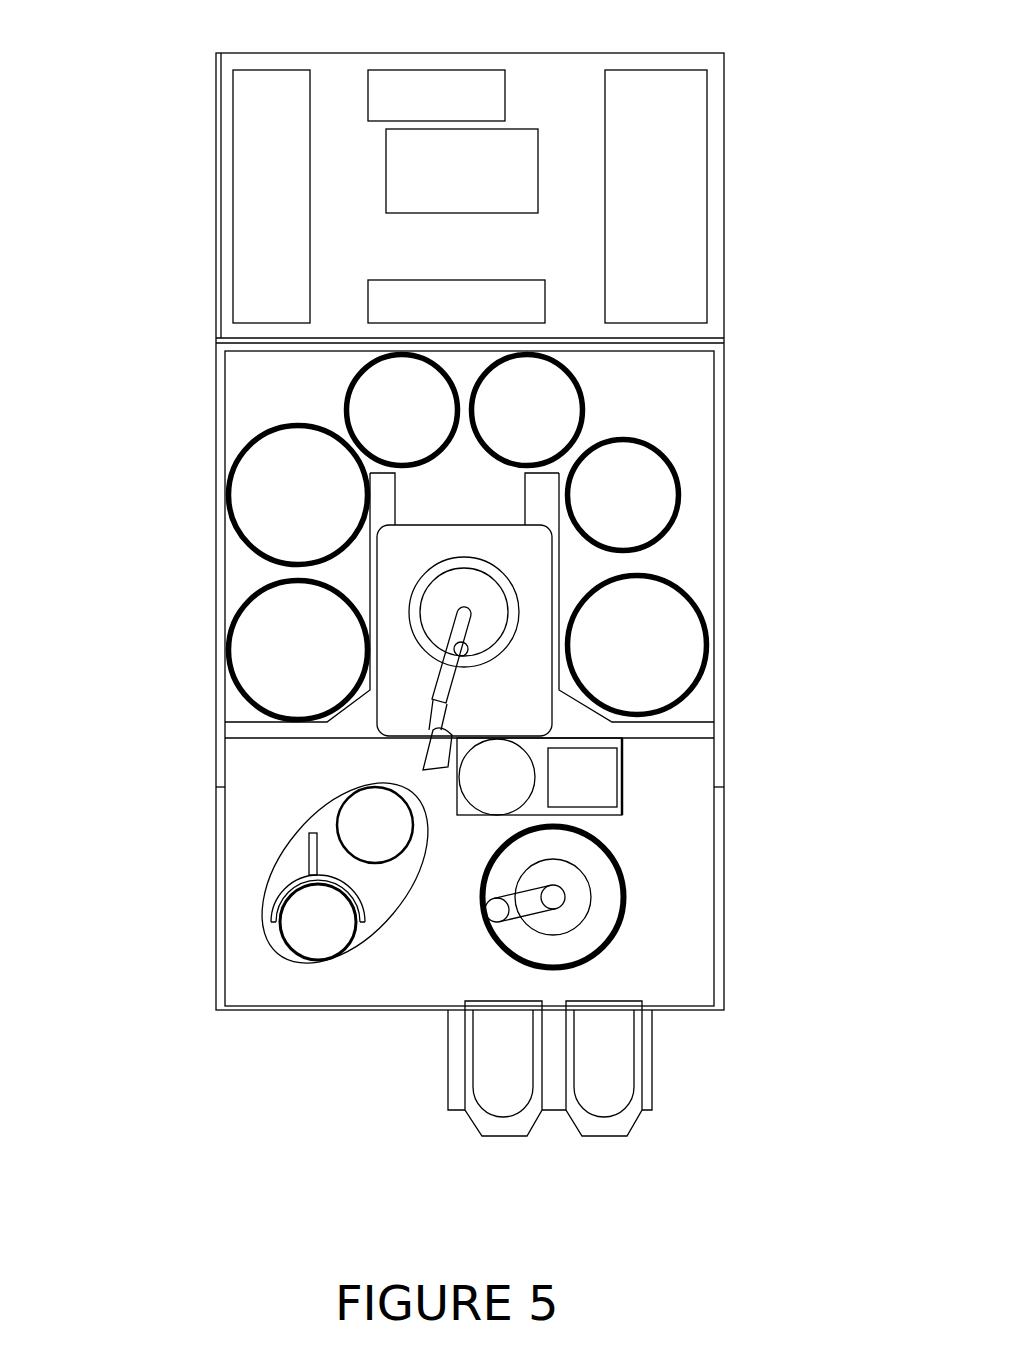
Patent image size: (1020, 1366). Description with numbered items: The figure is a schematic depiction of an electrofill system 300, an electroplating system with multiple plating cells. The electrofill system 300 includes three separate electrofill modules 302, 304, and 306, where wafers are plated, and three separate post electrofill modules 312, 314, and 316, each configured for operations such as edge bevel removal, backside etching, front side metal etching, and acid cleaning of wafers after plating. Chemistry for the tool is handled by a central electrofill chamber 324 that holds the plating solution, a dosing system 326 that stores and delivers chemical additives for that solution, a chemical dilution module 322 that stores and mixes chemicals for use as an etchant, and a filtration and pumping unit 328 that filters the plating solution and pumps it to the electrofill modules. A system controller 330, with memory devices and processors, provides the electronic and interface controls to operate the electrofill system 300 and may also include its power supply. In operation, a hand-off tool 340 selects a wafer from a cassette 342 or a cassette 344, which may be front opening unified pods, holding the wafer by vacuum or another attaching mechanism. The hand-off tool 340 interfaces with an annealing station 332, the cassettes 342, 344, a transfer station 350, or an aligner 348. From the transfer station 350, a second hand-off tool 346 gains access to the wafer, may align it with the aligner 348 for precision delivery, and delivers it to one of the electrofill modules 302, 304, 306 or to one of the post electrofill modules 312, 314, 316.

The electrofill system 300 is at (78, 90).
The electrofill module 302 is at (275, 650).
The electrofill module 304 is at (275, 520).
The electrofill module 306 is at (672, 647).
The post electrofill module 312 is at (378, 394).
The post electrofill module 314 is at (572, 419).
The post electrofill module 316 is at (657, 503).
The chemical dilution module 322 is at (385, 302).
The central electrofill chamber 324 is at (528, 175).
The dosing system 326 is at (437, 83).
The filtration and pumping unit 328 is at (672, 258).
The system controller 330 is at (272, 83).
The annealing station 332 is at (318, 942).
The hand-off tool 340 is at (553, 897).
The cassette 342 is at (497, 1110).
The cassette 344 is at (603, 1110).
The hand-off tool 346 is at (413, 719).
The aligner 348 is at (512, 795).
The transfer station 350 is at (597, 770).